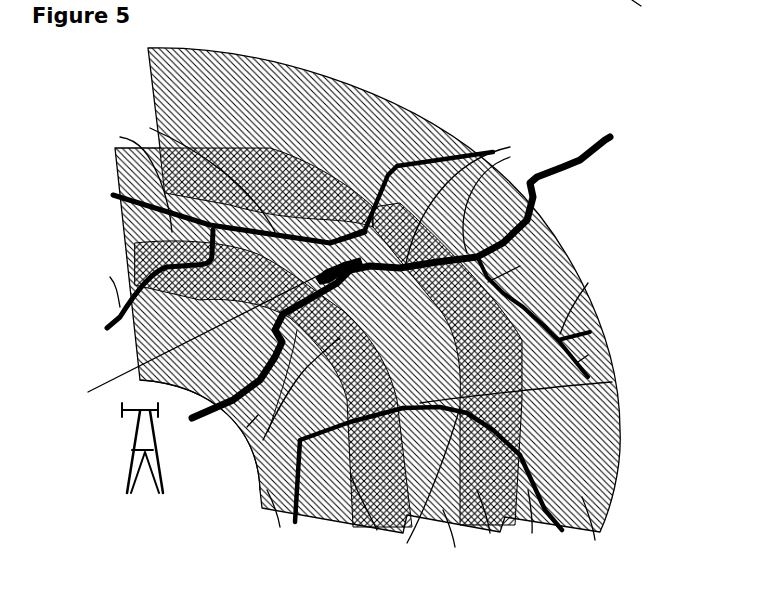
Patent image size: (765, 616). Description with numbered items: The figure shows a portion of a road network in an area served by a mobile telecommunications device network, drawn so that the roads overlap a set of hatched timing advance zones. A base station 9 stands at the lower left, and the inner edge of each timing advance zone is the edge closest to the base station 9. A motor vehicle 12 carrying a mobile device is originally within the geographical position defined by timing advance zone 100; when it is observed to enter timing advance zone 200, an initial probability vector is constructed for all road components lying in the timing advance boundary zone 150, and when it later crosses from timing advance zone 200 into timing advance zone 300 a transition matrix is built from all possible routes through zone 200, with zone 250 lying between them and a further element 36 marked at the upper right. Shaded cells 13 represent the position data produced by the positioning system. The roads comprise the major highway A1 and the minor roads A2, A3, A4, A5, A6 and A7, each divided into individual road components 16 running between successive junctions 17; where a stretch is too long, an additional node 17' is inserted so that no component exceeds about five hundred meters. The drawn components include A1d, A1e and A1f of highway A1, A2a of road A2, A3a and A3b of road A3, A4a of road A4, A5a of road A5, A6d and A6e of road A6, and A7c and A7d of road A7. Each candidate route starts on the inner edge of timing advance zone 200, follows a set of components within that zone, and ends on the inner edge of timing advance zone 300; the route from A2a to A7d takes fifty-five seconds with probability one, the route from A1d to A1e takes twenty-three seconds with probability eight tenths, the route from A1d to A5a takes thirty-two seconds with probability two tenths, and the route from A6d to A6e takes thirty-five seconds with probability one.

The base station 9 is at (127, 463).
The motor vehicle 12 is at (217, 335).
The shaded cells 13 is at (115, 252).
The road components 16 is at (300, 490).
The junctions 17 is at (401, 277).
The additional node 17' is at (537, 392).
The vehicle 36 is at (652, 9).
The timing advance zone 100 is at (280, 527).
The timing advance boundary zone 150 is at (377, 530).
The timing advance zone 200 is at (455, 547).
The range contour 250 is at (490, 533).
The timing advance zone 300 is at (595, 540).
The major highway A1 is at (218, 410).
The minor country road A2 is at (259, 378).
The minor country road A3 is at (533, 317).
The minor country road A4 is at (583, 321).
The minor country road A5 is at (447, 364).
The road A6 is at (487, 468).
The road A7 is at (326, 190).
The road component A1d is at (247, 427).
The road component A1e is at (510, 147).
The road component A1f is at (510, 157).
The road component A2a is at (110, 277).
The road component A3a is at (520, 266).
The road component A3b is at (588, 355).
The area A4 boundary segment a A4a is at (588, 283).
The road component A5a is at (263, 440).
The road component A6d is at (407, 543).
The road component A6e is at (532, 533).
The area A7 boundary segment c A7c is at (120, 137).
The road component A7d is at (150, 128).